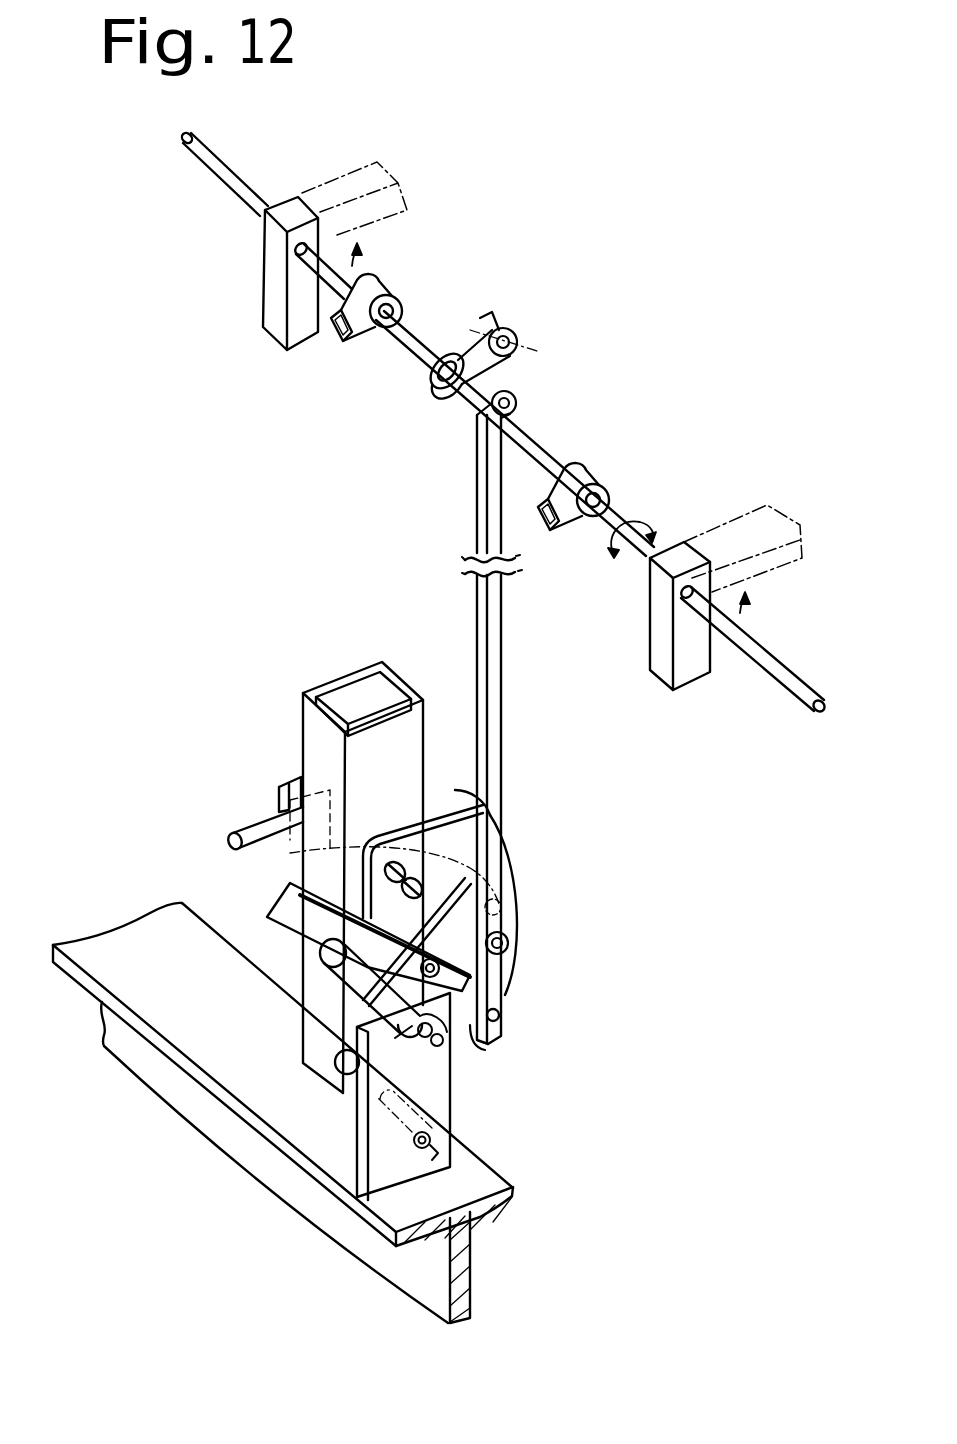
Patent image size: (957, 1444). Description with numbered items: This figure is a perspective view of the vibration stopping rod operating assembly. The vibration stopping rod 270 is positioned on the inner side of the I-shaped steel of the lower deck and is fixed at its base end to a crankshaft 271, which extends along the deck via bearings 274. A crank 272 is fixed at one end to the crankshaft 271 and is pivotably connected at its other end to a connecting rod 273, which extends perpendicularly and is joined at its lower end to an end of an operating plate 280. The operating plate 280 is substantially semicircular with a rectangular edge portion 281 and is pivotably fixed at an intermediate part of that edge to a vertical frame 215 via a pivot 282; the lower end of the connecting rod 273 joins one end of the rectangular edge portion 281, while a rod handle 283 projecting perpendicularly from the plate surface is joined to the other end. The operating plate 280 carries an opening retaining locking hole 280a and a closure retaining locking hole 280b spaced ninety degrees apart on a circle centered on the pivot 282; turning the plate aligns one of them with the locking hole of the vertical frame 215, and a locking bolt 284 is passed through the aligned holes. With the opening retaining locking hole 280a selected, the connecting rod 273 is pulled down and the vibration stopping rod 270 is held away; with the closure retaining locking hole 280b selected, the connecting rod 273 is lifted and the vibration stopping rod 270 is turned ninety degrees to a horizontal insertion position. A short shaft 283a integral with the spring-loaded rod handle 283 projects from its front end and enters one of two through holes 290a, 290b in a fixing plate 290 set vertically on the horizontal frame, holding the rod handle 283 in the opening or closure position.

The vertical frame 215 is at (313, 732).
The vibration stopping rod 270 is at (274, 300).
The crankshaft 271 is at (540, 443).
The crank 272 is at (508, 360).
The connecting rod 273 is at (495, 643).
The bearings 274 is at (372, 286).
The operating plate 280 is at (518, 885).
The opening retaining locking hole 280a is at (430, 823).
The closure retaining locking hole 280b is at (508, 946).
The rectangular edge portion 281 is at (467, 1030).
The pivot 282 is at (440, 968).
The rod handle 283 is at (353, 973).
The short shaft 283a is at (450, 1080).
The locking bolt 284 is at (231, 832).
The fixing plate 290 is at (383, 1168).
The through hole 290a is at (357, 1067).
The through hole 290b is at (433, 1137).